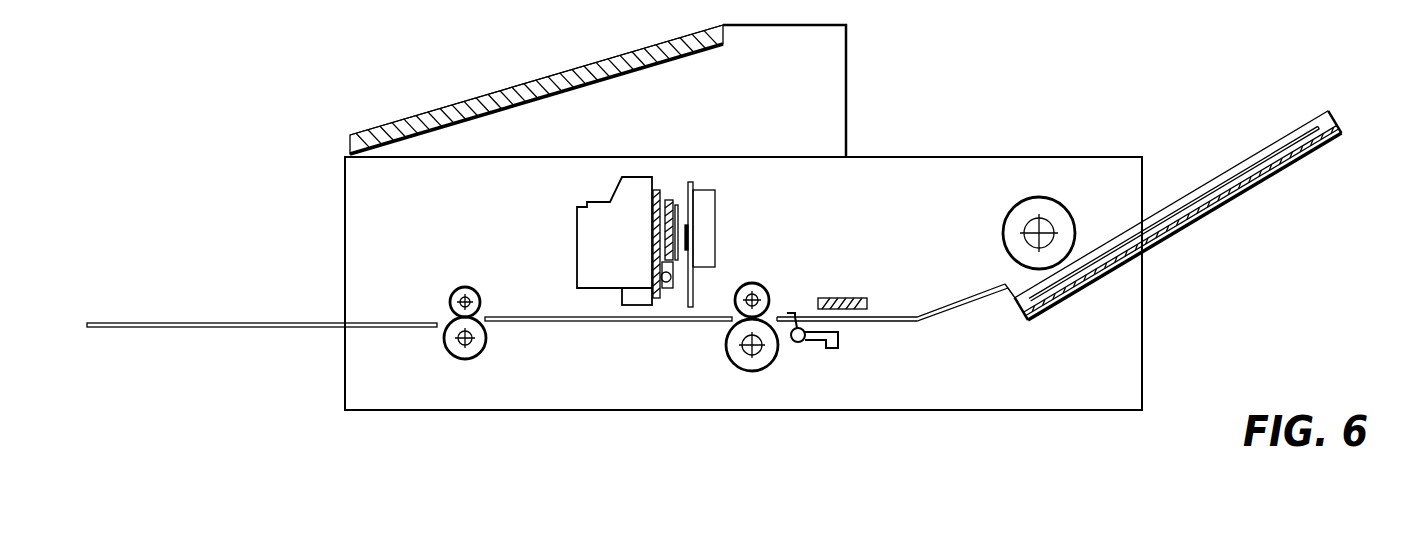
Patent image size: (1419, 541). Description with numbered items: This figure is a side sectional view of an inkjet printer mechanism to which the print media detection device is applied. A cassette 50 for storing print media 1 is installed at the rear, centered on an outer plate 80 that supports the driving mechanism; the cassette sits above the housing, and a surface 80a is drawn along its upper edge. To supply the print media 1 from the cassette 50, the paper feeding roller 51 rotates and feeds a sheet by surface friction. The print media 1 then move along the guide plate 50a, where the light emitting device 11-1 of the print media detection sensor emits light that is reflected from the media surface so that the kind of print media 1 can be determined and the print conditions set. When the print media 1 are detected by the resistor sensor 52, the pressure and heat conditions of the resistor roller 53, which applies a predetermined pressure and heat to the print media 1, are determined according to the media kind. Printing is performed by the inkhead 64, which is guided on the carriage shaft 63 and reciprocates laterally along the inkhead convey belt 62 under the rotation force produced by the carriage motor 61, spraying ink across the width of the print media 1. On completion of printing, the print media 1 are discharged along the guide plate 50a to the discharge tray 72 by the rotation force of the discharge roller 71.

The print media 1 is at (1305, 133).
The light emitting device 11-1 is at (845, 298).
The cassette 50 is at (1190, 227).
The guide plate 50a is at (673, 322).
The paper feeding roller 51 is at (1062, 210).
The resistor sensor 52 is at (813, 343).
The resistor roller 53 is at (748, 372).
The carriage motor 61 is at (705, 205).
The inkhead convey belt 62 is at (672, 195).
The carriage shaft 63 is at (637, 307).
The inkhead 64 is at (595, 248).
The discharge roller 71 is at (445, 350).
The discharge tray 72 is at (265, 328).
The outer plate 80 is at (452, 142).
The tray upper surface 80a is at (578, 68).